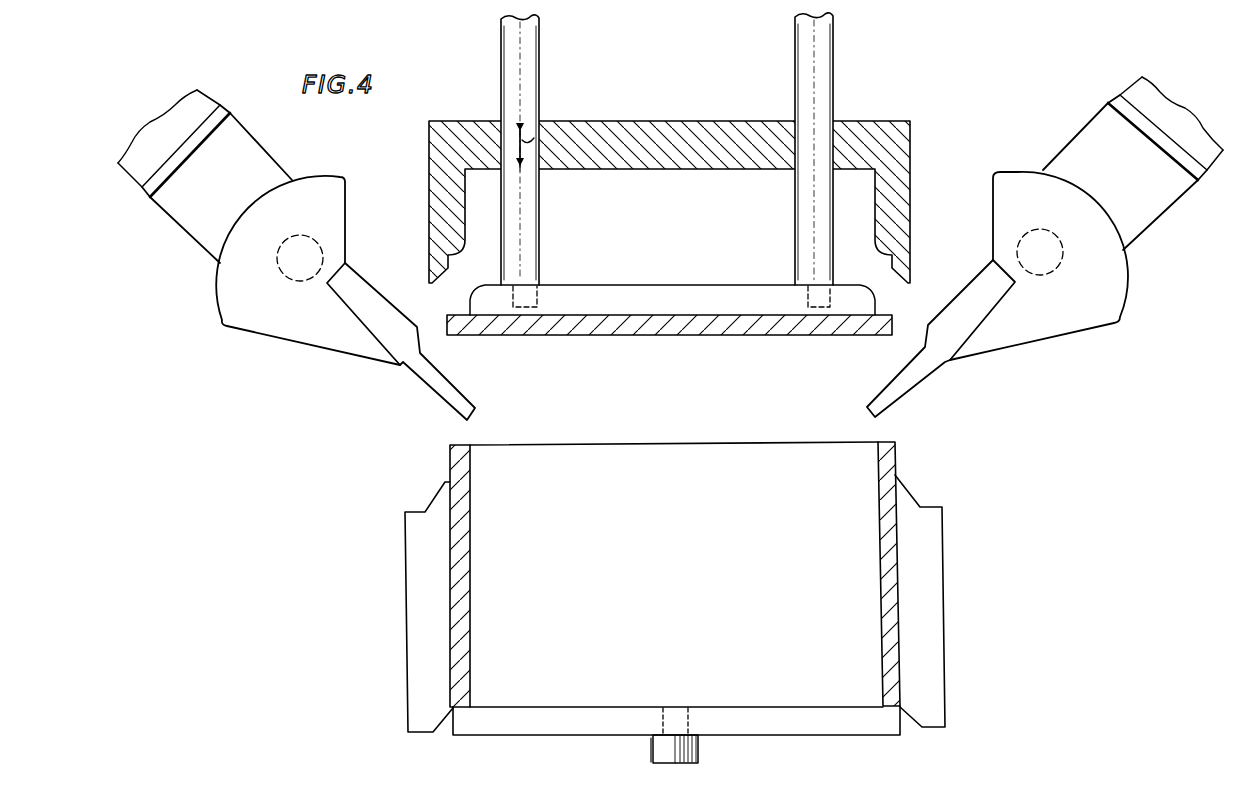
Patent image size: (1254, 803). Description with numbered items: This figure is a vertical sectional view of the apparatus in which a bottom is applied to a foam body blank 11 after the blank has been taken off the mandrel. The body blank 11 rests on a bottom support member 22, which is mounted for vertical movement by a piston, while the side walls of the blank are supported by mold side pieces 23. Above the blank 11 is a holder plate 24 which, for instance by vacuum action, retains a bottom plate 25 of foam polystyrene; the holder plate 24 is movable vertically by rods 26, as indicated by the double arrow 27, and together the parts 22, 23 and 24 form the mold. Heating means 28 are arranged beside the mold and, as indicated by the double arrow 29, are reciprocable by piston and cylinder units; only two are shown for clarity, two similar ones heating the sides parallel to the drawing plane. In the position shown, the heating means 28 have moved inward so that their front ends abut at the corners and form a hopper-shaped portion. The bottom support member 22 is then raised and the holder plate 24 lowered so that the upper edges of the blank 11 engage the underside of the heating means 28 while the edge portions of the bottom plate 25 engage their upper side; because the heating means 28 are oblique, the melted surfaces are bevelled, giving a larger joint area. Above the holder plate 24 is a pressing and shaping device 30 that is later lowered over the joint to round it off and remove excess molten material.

The body blank 11 is at (892, 458).
The bottom support member 22 is at (700, 746).
The mold side pieces 23 is at (417, 583).
The holder plate 24 is at (677, 295).
The bottom plate 25 is at (653, 323).
The rods 26 is at (523, 64).
The double arrow 27 is at (531, 118).
The heating means 28 is at (443, 390).
The double arrow 29 is at (177, 252).
The pressing and shaping device 30 is at (892, 132).